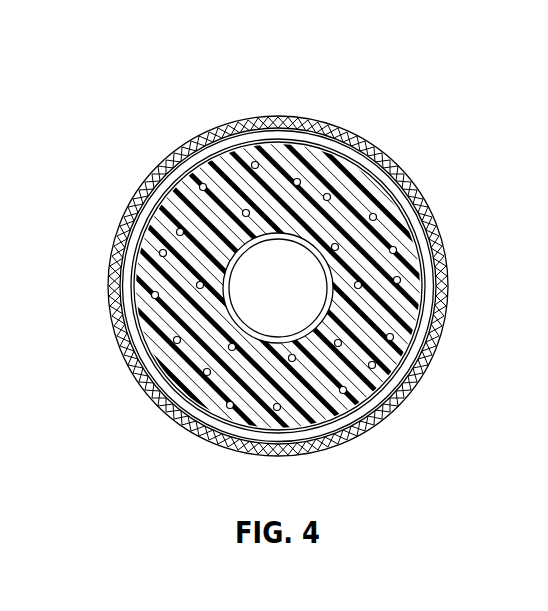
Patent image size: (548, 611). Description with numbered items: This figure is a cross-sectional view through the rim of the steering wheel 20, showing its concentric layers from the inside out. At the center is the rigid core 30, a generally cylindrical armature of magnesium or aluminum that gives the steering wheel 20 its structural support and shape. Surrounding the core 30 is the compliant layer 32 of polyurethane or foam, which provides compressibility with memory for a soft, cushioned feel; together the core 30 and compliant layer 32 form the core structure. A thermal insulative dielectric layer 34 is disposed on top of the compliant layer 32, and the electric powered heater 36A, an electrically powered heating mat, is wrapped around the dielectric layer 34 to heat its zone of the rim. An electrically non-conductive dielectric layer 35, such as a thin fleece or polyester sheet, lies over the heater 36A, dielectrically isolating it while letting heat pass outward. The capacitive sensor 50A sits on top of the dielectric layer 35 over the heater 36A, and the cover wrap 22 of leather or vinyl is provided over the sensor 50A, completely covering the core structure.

The steering wheel 20 is at (136, 120).
The cover wrap 22 is at (152, 183).
The rigid core 30 is at (297, 234).
The compliant layer 32 is at (407, 242).
The thermal insulative dielectric layer 34 is at (425, 308).
The electrically non-conductive dielectric layer 35 is at (395, 403).
The electric powered heater 36A is at (423, 373).
The capacitive sensor 50A is at (304, 108).